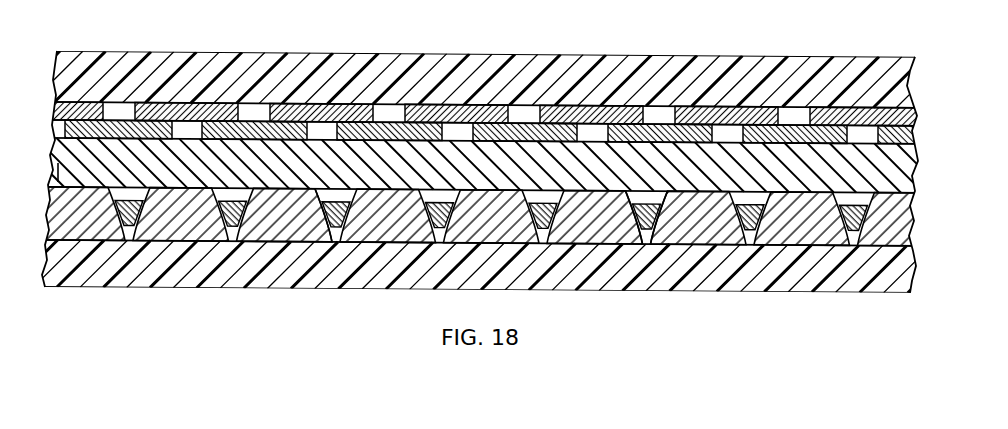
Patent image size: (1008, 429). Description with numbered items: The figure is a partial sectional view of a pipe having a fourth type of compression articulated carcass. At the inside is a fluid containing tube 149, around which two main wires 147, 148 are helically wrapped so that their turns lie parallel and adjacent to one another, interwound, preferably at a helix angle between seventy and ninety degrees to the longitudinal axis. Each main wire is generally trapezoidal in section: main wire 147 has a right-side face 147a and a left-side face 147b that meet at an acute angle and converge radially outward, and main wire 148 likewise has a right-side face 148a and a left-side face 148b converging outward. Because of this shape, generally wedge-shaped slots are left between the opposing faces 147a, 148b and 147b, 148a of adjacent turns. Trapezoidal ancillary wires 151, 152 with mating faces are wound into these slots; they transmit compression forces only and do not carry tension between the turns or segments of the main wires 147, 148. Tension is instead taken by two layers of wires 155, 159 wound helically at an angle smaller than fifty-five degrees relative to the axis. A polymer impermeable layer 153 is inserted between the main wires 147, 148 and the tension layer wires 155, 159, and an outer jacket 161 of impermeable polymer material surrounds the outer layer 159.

The main wire 147 is at (785, 228).
The face 147a is at (646, 241).
The face 147b is at (347, 202).
The main wire 148 is at (695, 224).
The face 148a is at (325, 222).
The face 148b is at (668, 112).
The fluid containing tube 149 is at (833, 270).
The ancillary wire 151 is at (668, 112).
The ancillary wire 152 is at (287, 287).
The polymer impermeable layer 153 is at (155, 160).
The tension layer wire 155 is at (90, 142).
The tension layer wire 159 is at (353, 108).
The outer jacket 161 is at (487, 73).